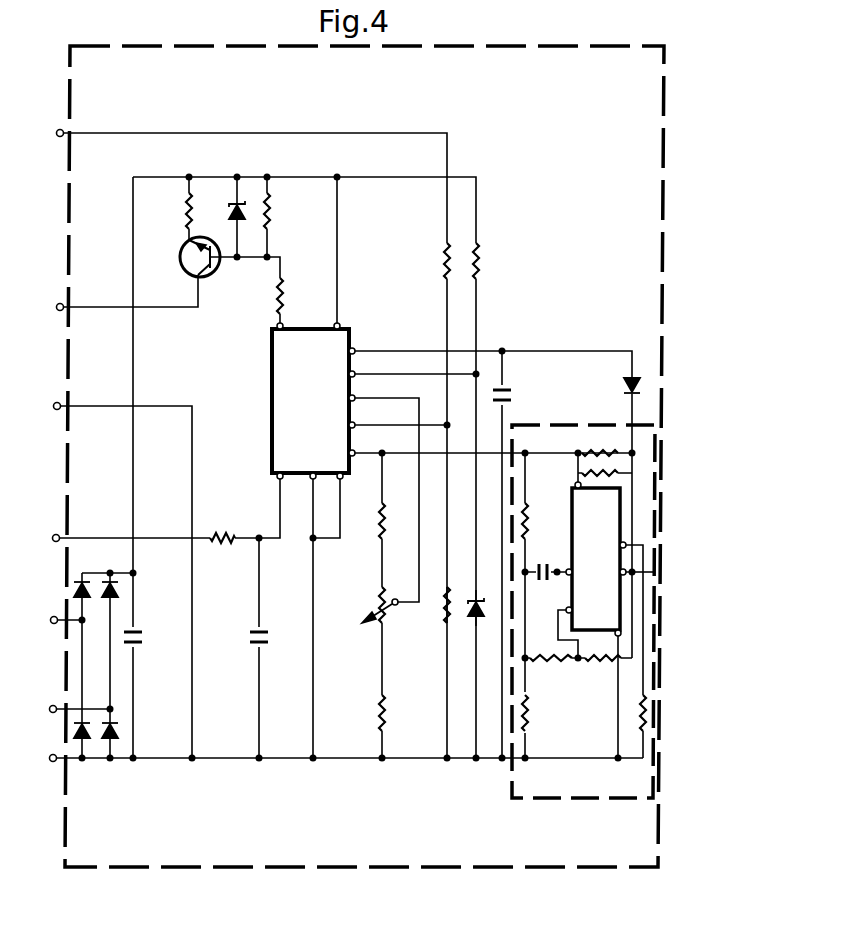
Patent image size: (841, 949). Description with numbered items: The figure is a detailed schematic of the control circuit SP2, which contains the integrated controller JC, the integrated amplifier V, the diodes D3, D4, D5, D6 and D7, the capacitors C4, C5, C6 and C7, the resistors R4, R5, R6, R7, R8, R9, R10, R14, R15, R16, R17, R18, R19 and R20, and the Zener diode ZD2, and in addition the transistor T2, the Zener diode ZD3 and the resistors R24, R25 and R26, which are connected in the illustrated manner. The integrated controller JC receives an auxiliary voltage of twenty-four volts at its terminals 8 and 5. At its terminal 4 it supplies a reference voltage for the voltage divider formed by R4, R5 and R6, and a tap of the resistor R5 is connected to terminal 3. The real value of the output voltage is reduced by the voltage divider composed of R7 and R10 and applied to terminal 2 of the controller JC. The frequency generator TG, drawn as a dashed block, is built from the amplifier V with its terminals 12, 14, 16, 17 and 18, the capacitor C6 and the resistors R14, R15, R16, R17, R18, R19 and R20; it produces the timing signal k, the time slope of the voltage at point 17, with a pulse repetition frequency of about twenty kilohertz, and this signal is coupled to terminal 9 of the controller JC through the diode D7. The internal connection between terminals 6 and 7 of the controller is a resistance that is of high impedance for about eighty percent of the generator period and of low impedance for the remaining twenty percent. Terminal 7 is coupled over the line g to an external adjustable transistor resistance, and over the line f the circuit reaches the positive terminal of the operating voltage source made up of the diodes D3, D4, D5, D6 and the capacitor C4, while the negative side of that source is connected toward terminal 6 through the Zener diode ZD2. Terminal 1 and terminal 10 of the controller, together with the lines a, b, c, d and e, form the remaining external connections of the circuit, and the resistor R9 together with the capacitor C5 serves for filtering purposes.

The control circuit SP2 is at (492, 47).
The frequency generator TG is at (590, 799).
The integrated controller JC is at (272, 355).
The integrated amplifier V is at (620, 497).
The transistor T2 is at (187, 257).
The resistor R4 is at (396, 521).
The resistor R5 is at (372, 605).
The resistor R6 is at (396, 713).
The resistor R7 is at (433, 606).
The resistor R8 is at (491, 261).
The resistor R9 is at (222, 527).
The resistor R10 is at (431, 261).
The resistor R14 is at (542, 521).
The resistor R15 is at (544, 713).
The resistor R16 is at (551, 647).
The resistor R17 is at (603, 671).
The resistor R18 is at (600, 452).
The resistor R19 is at (580, 473).
The resistor R20 is at (640, 712).
The resistor R24 is at (171, 211).
The resistor R25 is at (286, 211).
The resistor R26 is at (298, 296).
The capacitor C4 is at (146, 639).
The capacitor C5 is at (272, 639).
The capacitor C6 is at (544, 560).
The capacitor C7 is at (515, 398).
The diode D3 is at (74, 585).
The diode D4 is at (102, 585).
The diode D5 is at (78, 738).
The diode D6 is at (106, 738).
The diode D7 is at (621, 386).
The Zener diode ZD2 is at (480, 618).
The Zener diode ZD3 is at (221, 213).
The terminal 1 is at (279, 480).
The terminal 2 is at (355, 456).
The terminal 3 is at (355, 396).
The terminal 4 is at (355, 428).
The terminal 5 is at (308, 485).
The terminal 6 is at (355, 372).
The terminal 7 is at (277, 327).
The terminal 8 is at (343, 317).
The terminal 9 is at (358, 341).
The terminal 10 is at (334, 485).
The terminal 12 is at (575, 486).
The terminal 14 is at (567, 575).
The terminal 16 is at (616, 630).
The point 17 is at (611, 572).
The terminal 18 is at (625, 548).
The line a is at (52, 608).
The line b is at (50, 697).
The line c is at (54, 525).
The line d is at (57, 119).
The line e is at (50, 744).
The line f is at (55, 392).
The line g is at (57, 294).
The timing signal k is at (643, 573).